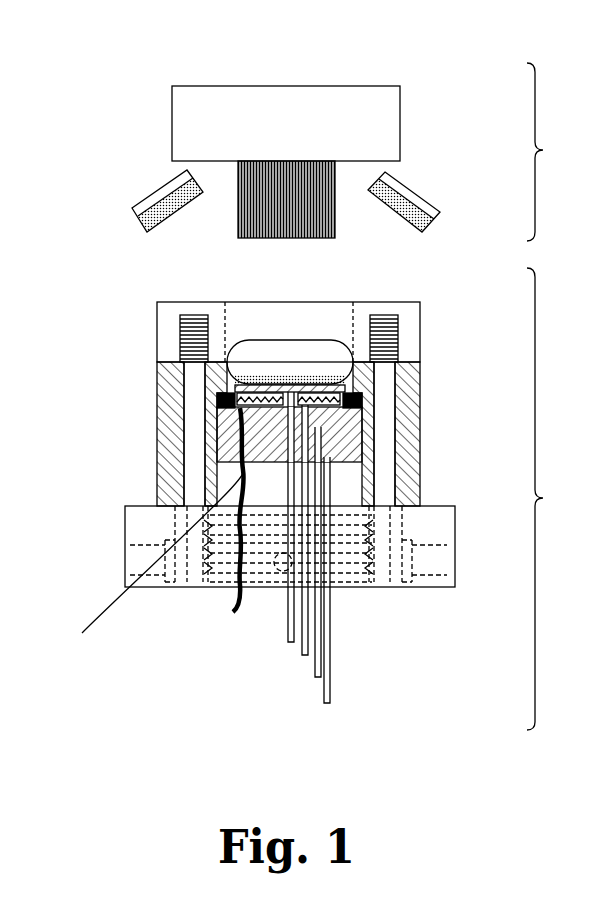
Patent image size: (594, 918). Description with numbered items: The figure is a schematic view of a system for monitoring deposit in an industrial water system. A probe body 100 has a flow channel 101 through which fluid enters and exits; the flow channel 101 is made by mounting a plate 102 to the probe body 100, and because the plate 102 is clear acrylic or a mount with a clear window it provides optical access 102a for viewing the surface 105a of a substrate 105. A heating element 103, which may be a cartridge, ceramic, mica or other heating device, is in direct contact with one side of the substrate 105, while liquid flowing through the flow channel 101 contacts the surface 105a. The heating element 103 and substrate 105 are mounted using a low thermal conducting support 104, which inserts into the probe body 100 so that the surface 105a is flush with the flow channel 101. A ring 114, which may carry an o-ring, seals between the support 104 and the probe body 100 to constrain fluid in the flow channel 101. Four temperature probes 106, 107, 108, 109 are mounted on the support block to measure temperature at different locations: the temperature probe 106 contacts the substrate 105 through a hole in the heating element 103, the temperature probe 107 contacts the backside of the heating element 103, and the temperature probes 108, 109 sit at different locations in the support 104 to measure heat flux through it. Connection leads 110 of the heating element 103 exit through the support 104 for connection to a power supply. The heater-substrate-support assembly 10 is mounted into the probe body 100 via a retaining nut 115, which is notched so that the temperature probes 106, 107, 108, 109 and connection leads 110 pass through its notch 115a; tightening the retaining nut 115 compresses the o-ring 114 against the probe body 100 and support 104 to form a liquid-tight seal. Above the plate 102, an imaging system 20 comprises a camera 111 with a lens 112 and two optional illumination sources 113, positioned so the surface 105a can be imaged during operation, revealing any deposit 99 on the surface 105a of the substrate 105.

The assembly 10 is at (549, 499).
The imaging system 20 is at (547, 152).
The deposit 99 is at (307, 378).
The probe body 100 is at (140, 503).
The flow channel 101 is at (332, 352).
The plate 102 is at (162, 310).
The optical access 102a is at (269, 326).
The heating element 103 is at (325, 412).
The support 104 is at (150, 563).
The substrate 105 is at (330, 380).
The surface 105a is at (250, 374).
The temperature probe 106 is at (288, 628).
The temperature probe 107 is at (302, 650).
The temperature probe 108 is at (316, 674).
The temperature probe 109 is at (326, 700).
The connection leads 110 is at (233, 612).
The camera 111 is at (387, 115).
The lens 112 is at (247, 208).
The illumination sources 113 is at (163, 188).
The ring 114 is at (345, 393).
The retaining nut 115 is at (368, 592).
The notch 115a is at (340, 590).